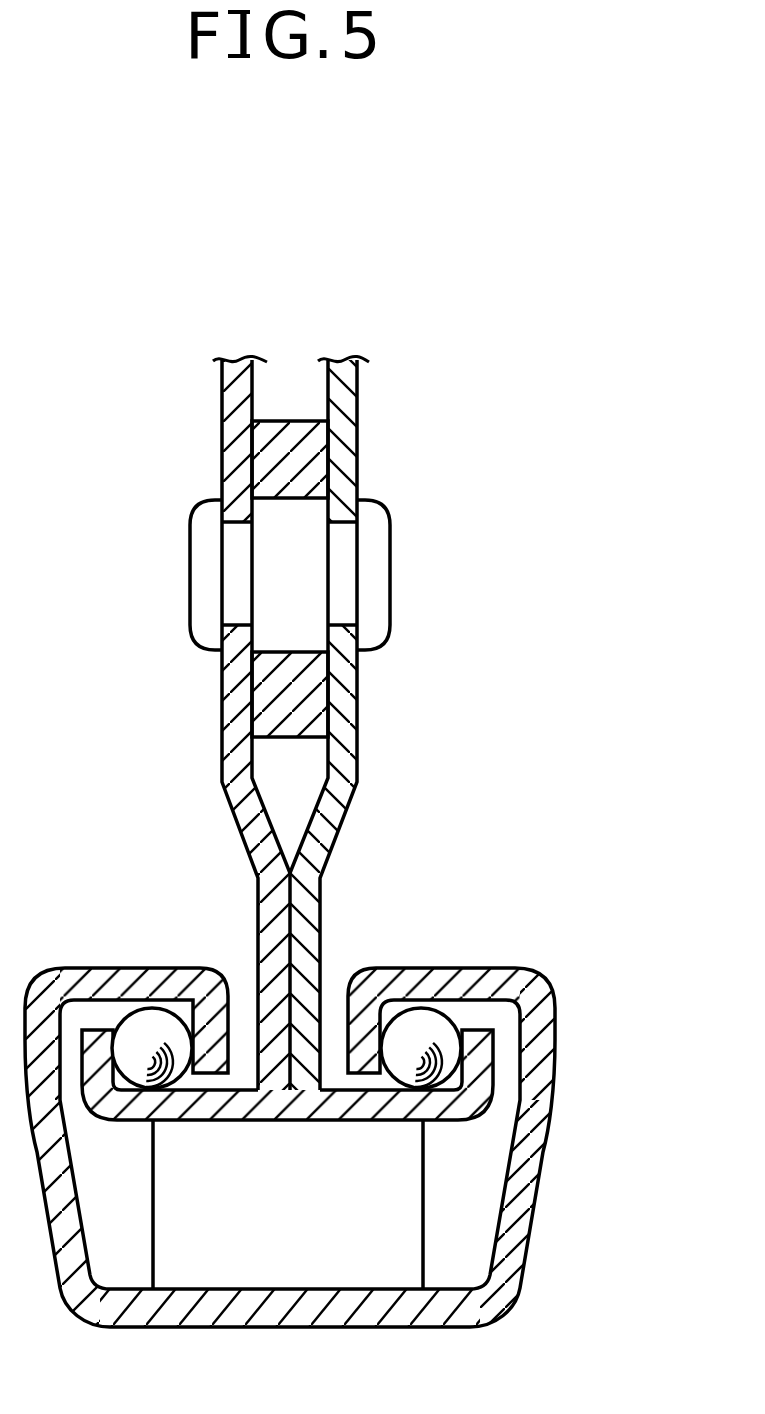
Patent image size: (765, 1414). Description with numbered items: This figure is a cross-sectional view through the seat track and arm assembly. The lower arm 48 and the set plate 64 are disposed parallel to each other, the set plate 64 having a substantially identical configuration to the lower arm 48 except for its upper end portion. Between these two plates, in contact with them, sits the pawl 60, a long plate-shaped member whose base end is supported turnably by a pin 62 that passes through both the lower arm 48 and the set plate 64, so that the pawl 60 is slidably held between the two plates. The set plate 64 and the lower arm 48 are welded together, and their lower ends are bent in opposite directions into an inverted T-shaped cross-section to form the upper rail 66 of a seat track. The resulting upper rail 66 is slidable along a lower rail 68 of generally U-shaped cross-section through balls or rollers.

The lower arm 48 is at (350, 755).
The pawl 60 is at (293, 437).
The pin 62 is at (307, 585).
The set plate 64 is at (233, 752).
The upper rail 66 is at (329, 1003).
The lower rail 68 is at (520, 1210).